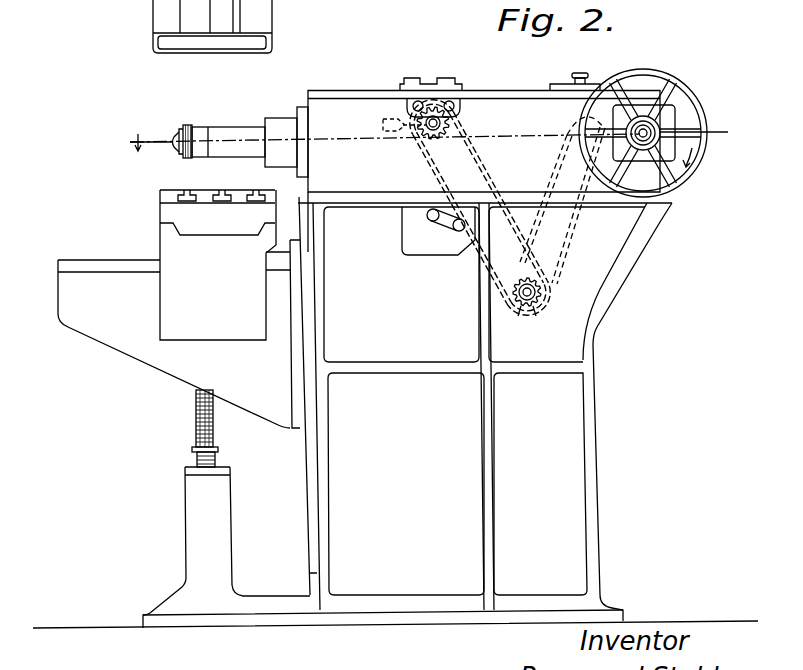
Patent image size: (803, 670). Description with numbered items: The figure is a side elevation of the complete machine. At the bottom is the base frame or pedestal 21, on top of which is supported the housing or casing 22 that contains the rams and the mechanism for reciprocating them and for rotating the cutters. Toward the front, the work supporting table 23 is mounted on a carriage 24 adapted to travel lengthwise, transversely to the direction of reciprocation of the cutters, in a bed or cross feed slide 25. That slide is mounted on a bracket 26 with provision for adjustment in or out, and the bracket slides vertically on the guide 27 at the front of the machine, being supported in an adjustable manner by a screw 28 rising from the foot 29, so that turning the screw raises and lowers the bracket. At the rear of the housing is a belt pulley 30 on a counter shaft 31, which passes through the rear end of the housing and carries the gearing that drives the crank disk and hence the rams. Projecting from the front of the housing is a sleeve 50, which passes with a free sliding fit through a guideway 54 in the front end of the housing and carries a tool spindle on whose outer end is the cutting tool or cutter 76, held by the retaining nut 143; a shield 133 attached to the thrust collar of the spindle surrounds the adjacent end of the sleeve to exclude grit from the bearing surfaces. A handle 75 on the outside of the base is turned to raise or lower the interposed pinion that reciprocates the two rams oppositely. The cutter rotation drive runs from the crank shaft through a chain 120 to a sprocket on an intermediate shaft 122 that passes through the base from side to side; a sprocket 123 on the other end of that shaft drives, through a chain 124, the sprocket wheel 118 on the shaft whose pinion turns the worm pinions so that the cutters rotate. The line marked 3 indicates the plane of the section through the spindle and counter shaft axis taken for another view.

The section line 3- 3 is at (423, 138).
The base frame or pedestal 21 is at (567, 332).
The housing or casing 22 is at (343, 115).
The work supporting table 23 is at (198, 190).
The carriage 24 is at (202, 222).
The bed or cross feed slide 25 is at (175, 253).
The bracket 26 is at (103, 310).
The guide 27 is at (308, 465).
The screw 28 is at (196, 418).
The foot 29 is at (195, 548).
The belt pulley 30 is at (658, 100).
The counter shaft 31 is at (657, 125).
The sleeve 50 is at (235, 126).
The guideway 54 is at (281, 125).
The handle 75 is at (387, 134).
The cutting tool or cutter 76 is at (187, 125).
The sprocket wheel 118 is at (442, 142).
The chain 120 is at (571, 231).
The intermediate shaft 122 is at (532, 292).
The sprocket 123 is at (525, 310).
The chain 124 is at (490, 177).
The shield 133 is at (197, 125).
The retaining nut 143 is at (182, 130).